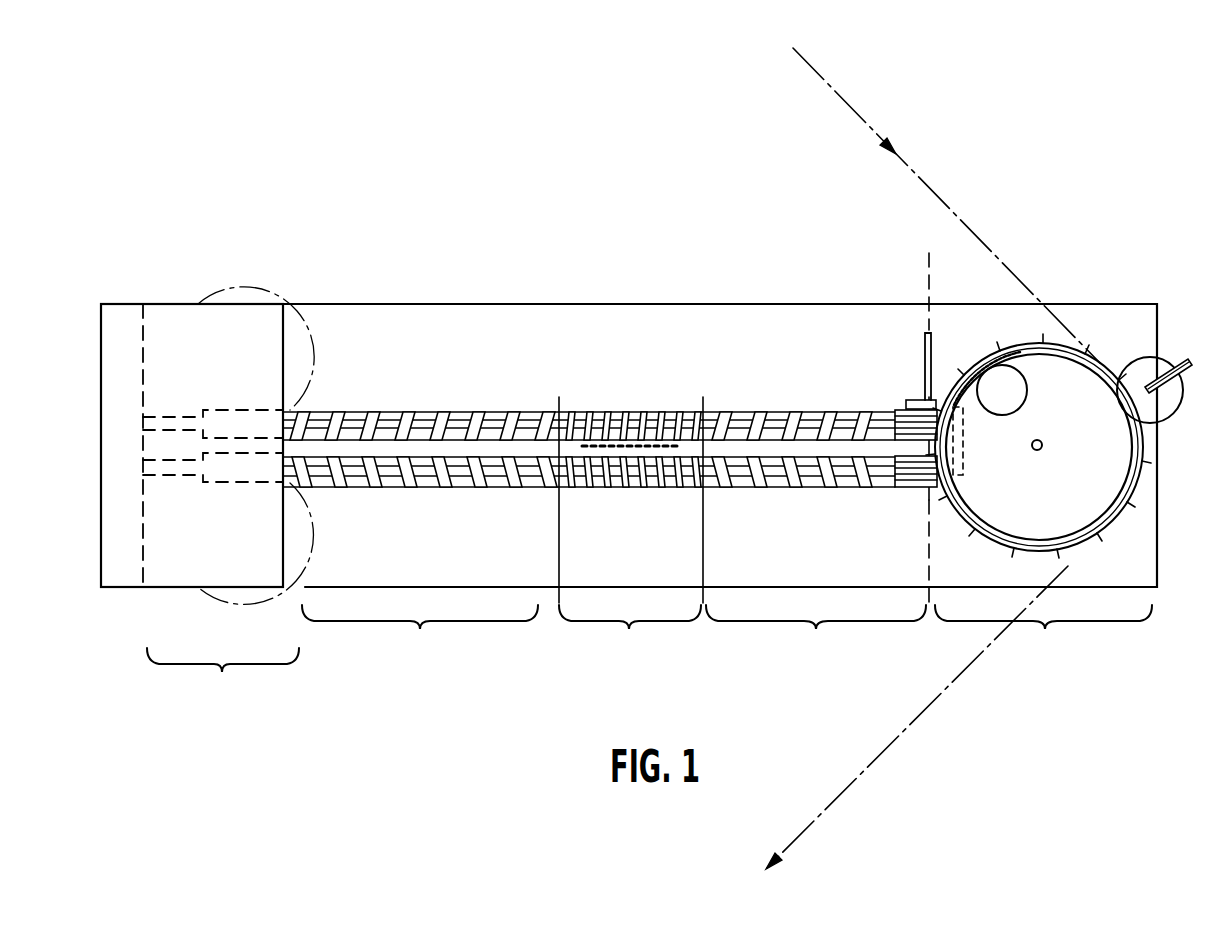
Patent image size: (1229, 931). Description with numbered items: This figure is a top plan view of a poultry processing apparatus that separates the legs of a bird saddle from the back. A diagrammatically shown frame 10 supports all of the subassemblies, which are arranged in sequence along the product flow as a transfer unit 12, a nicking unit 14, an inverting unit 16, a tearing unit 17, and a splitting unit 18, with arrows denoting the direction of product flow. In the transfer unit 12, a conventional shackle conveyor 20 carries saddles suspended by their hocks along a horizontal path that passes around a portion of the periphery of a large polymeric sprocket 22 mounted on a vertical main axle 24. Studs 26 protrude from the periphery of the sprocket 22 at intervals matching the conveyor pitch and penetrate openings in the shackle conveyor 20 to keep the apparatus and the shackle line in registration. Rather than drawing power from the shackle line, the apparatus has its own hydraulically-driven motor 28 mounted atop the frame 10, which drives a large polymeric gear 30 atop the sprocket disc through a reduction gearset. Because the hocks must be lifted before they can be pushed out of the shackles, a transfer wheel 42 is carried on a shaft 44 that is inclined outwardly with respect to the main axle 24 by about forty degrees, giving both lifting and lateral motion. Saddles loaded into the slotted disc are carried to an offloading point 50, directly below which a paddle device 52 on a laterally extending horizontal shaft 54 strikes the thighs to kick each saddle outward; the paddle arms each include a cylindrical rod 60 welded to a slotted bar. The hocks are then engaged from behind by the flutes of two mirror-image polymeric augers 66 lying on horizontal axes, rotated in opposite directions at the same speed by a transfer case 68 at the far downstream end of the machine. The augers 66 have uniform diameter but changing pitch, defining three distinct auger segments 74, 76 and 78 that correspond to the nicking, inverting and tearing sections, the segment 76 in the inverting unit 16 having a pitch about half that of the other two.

The frame 10 is at (452, 303).
The transfer unit 12 is at (1043, 634).
The nicking unit 14 is at (817, 458).
The inverting unit 16 is at (631, 508).
The tearing unit 17 is at (424, 530).
The splitting unit 18 is at (230, 496).
The shackle conveyor 20 is at (968, 224).
The sprocket 22 is at (1133, 497).
The main axle 24 is at (1042, 450).
The studs 26 is at (1139, 469).
The motor 28 is at (1022, 388).
The gear 30 is at (1079, 352).
The transfer wheel 42 is at (1173, 400).
The shaft 44 is at (1179, 356).
The offloading point 50 is at (942, 490).
The paddle device 52 is at (910, 400).
The horizontal shaft 54 is at (932, 360).
The cylindrical rod 60 is at (963, 447).
The augers 66 is at (755, 411).
The transfer case 68 is at (118, 493).
The auger segment 74 is at (814, 411).
The auger segment 76 is at (614, 411).
The auger segment 78 is at (452, 411).